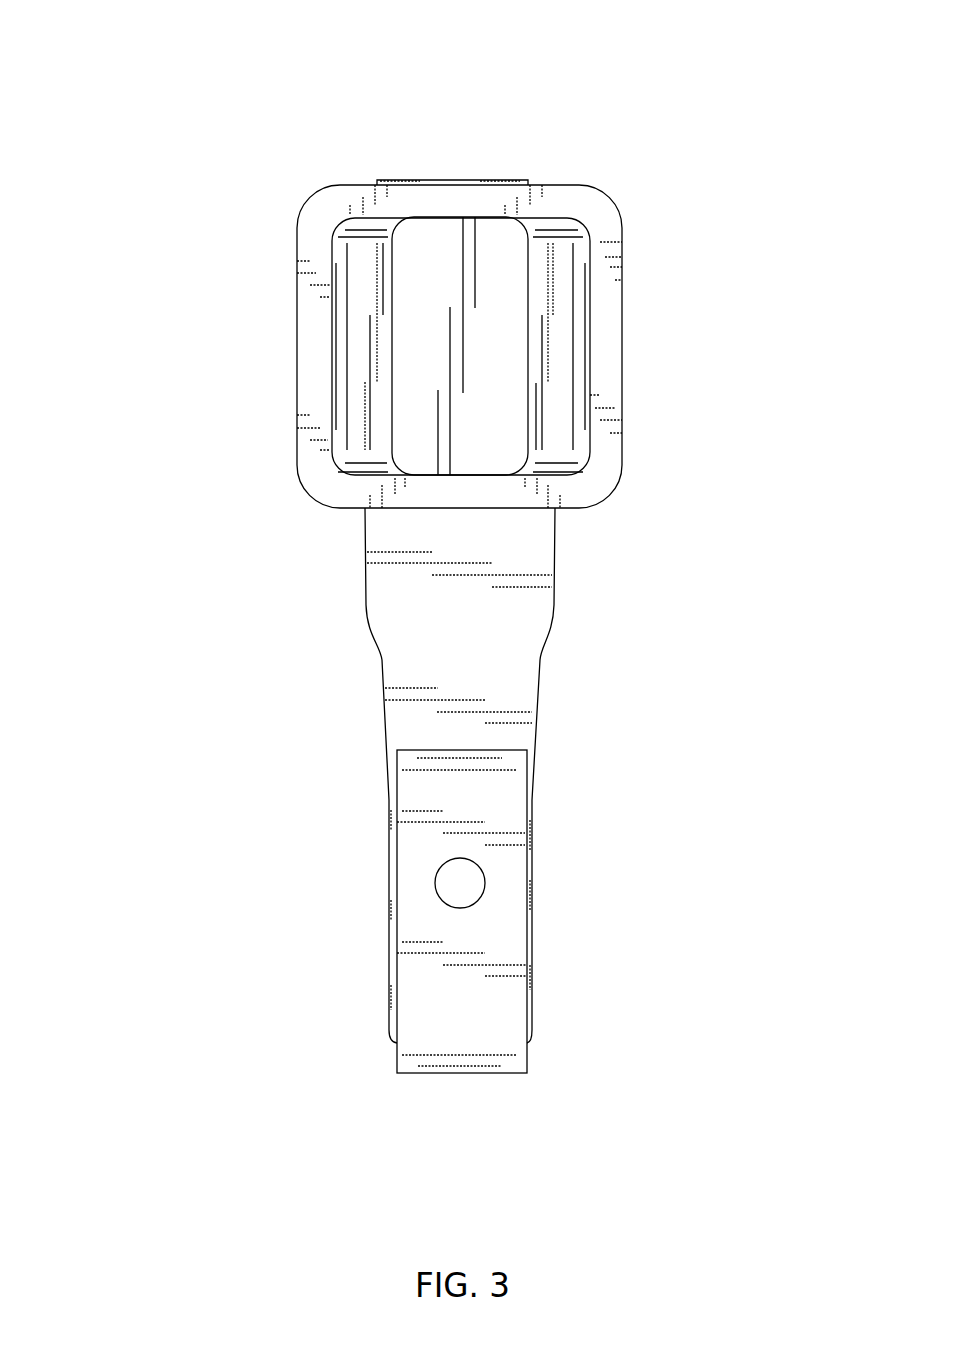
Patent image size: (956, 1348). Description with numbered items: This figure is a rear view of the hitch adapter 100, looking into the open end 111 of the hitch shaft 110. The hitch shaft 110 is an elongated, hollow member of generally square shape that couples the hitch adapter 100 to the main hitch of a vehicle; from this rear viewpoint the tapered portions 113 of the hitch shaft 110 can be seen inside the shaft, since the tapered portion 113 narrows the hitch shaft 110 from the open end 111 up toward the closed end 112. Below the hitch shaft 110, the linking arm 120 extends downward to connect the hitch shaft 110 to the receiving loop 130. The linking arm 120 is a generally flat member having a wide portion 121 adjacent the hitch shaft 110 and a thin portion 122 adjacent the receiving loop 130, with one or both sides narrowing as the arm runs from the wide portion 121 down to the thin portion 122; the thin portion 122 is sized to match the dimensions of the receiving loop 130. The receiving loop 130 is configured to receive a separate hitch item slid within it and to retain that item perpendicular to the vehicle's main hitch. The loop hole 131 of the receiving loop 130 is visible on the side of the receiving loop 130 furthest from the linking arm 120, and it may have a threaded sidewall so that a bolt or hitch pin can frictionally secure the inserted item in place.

The hitch adapter 100 is at (160, 158).
The hitch shaft 110 is at (266, 326).
The open end 111 is at (327, 450).
The closed end 112 is at (490, 244).
The tapered portion 113 is at (565, 288).
The linking arm 120 is at (552, 705).
The wide portion 121 is at (365, 563).
The thin portion 122 is at (390, 1007).
The receiving loop 130 is at (466, 1086).
The loop hole 131 is at (485, 884).